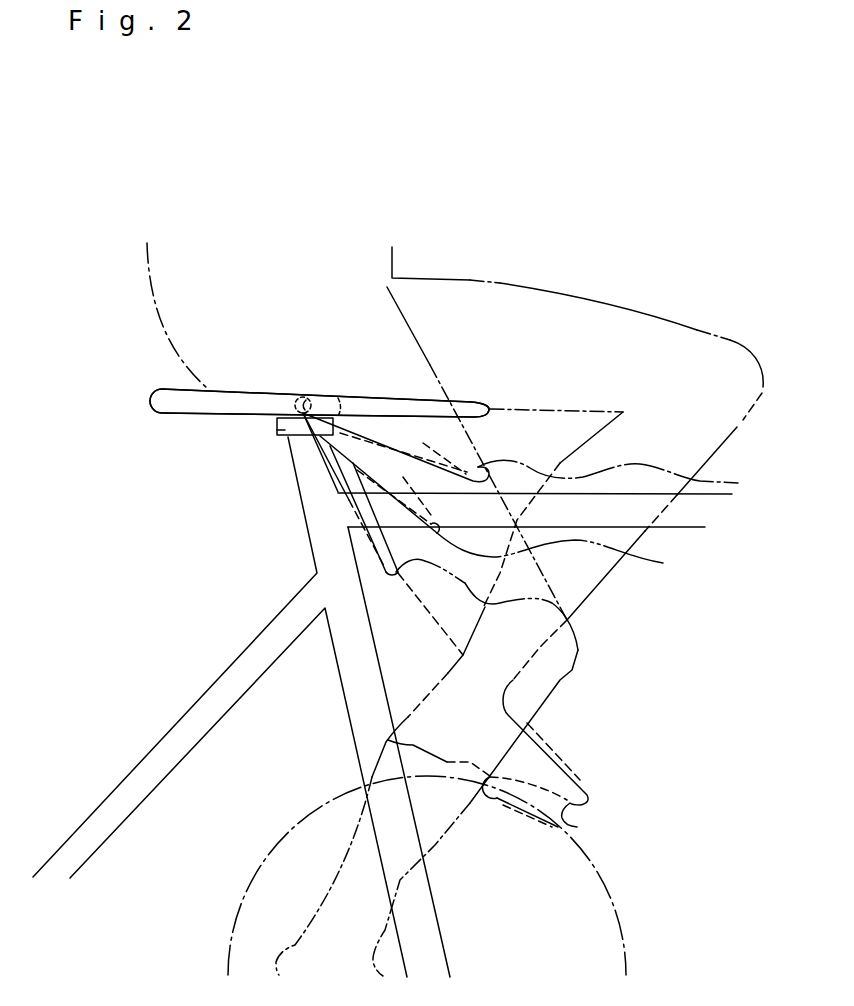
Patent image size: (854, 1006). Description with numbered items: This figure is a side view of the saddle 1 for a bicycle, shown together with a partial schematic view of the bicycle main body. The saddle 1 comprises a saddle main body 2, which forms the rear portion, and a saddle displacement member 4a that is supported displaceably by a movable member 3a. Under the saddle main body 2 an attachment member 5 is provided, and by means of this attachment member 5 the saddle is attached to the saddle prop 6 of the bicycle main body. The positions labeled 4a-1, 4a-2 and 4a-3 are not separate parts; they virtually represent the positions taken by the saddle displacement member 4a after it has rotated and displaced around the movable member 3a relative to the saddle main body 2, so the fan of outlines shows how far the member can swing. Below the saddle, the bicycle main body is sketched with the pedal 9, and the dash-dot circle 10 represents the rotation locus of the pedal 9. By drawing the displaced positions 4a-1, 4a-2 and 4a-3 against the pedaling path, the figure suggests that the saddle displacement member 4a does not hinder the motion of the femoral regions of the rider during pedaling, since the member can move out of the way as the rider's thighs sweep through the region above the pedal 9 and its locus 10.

The saddle 1 is at (146, 405).
The saddle main body 2 is at (196, 413).
The movable member 3a is at (310, 396).
The saddle displacement member 4a is at (368, 408).
The saddle displacement member 4a-1 is at (555, 455).
The saddle displacement member 4a-2 is at (527, 510).
The saddle displacement member 4a-3 is at (572, 622).
The attachment member 5 is at (277, 435).
The saddle prop 6 is at (307, 486).
The pedal 9 is at (578, 822).
The rotation locus of the pedal 10 is at (618, 920).